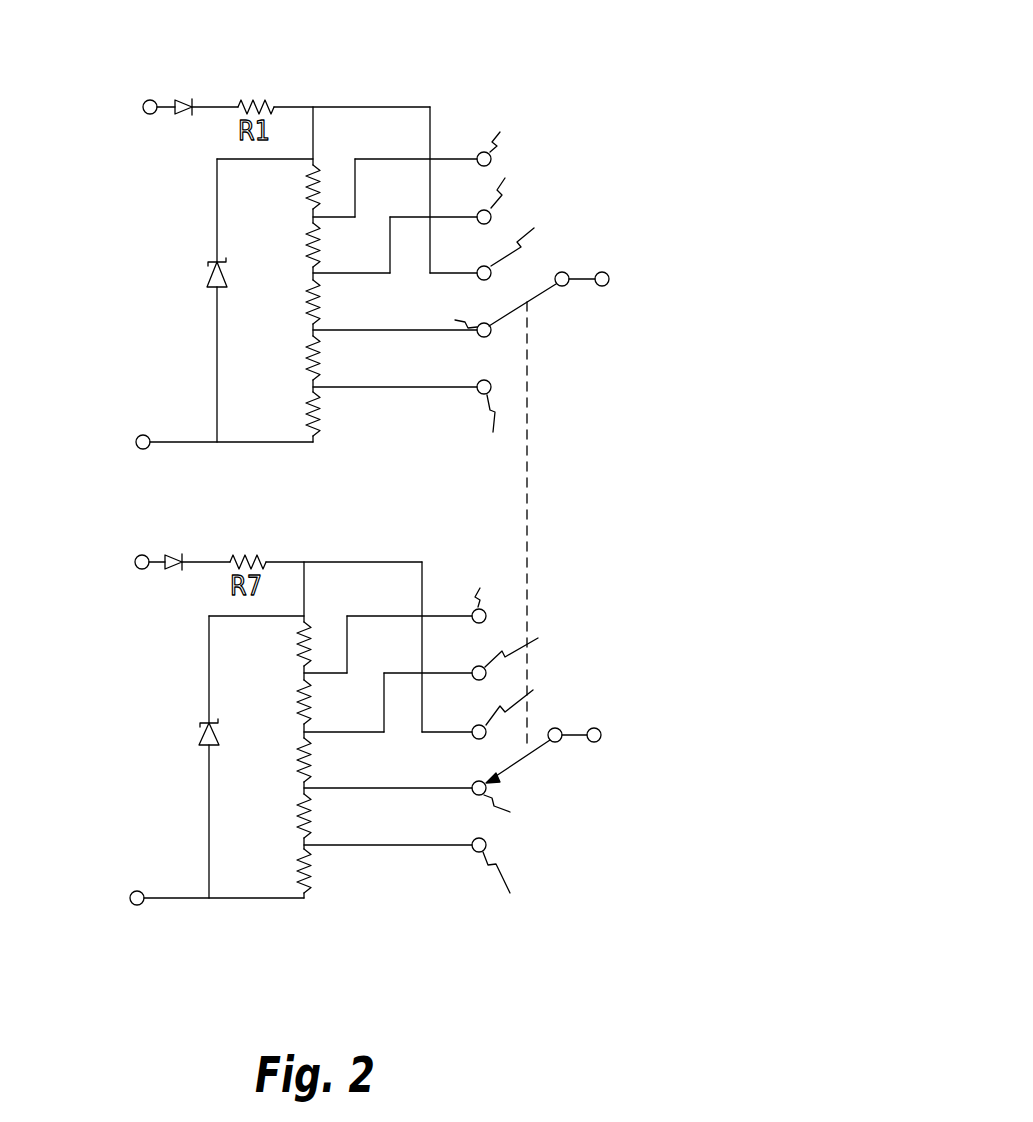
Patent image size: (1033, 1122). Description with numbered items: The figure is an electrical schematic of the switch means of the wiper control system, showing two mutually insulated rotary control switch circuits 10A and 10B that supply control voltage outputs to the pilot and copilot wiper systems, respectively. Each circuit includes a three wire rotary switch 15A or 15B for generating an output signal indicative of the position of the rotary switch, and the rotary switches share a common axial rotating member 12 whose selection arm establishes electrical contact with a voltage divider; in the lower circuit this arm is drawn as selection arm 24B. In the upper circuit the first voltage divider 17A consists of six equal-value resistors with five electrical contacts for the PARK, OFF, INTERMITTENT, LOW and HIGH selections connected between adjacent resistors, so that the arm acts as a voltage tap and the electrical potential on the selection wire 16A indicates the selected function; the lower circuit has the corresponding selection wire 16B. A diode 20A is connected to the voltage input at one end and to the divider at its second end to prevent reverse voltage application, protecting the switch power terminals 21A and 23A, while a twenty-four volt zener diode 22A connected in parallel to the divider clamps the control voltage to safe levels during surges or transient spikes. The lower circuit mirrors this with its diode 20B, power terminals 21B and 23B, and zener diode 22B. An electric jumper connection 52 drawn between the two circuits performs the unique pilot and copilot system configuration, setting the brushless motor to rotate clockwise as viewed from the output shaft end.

The rotary control switch circuit 10A is at (379, 392).
The rotary control switch circuit 10B is at (376, 850).
The axial rotating member 12 is at (565, 286).
The three wire rotary switch 15A is at (565, 446).
The three wire rotary switch 15B is at (576, 738).
The selection wire 16A is at (597, 272).
The switch power terminal B 16B is at (592, 728).
The first voltage divider 17A is at (355, 135).
The diode 20A is at (186, 96).
The diode B 20B is at (172, 552).
The switch power terminal 21A is at (153, 116).
The input terminal B 21B is at (146, 570).
The zener diode 22A is at (207, 268).
The zener diode B 22B is at (200, 727).
The switch power terminal 23A is at (136, 439).
The ground terminal B 23B is at (131, 893).
The switch arm B 24B is at (523, 758).
The jumper connection 52 is at (528, 520).